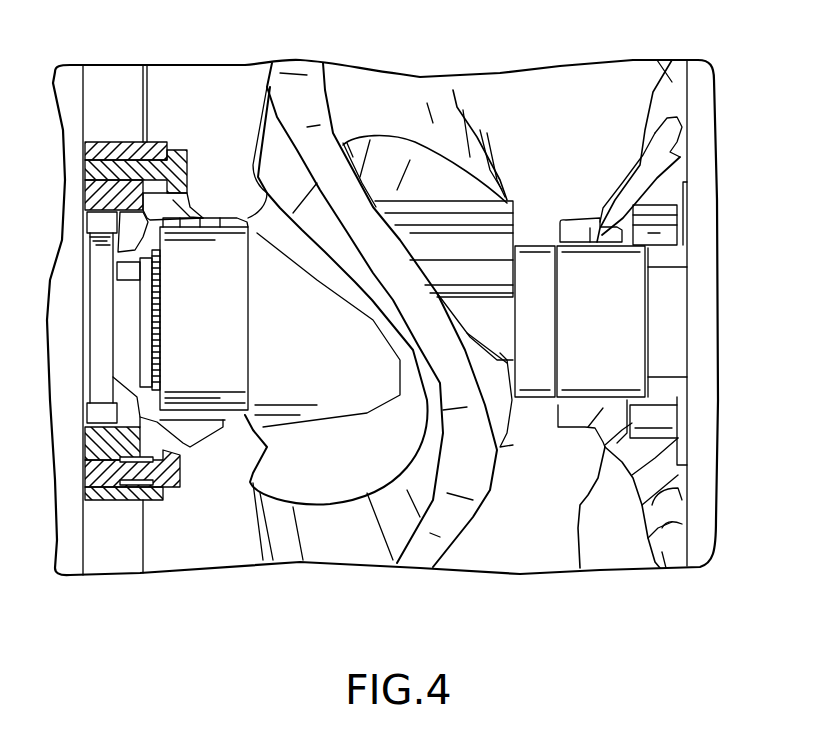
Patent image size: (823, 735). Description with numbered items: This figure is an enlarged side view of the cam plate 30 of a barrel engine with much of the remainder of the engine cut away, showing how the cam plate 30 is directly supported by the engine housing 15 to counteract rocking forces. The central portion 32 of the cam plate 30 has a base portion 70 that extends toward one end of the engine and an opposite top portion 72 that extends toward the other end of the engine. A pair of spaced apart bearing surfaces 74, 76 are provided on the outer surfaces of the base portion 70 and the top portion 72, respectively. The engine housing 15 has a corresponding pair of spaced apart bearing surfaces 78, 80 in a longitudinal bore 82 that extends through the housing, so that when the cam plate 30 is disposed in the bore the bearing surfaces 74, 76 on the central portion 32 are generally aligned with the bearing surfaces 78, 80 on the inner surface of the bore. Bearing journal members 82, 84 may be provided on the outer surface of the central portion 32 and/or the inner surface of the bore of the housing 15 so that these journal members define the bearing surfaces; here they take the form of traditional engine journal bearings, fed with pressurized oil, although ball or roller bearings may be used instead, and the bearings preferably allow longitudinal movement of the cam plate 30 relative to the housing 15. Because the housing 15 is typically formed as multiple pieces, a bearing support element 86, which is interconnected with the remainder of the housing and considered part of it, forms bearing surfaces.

The engine housing 15 is at (670, 173).
The cam plate 30 is at (513, 183).
The central portion 32 is at (445, 203).
The base portion 70 is at (590, 283).
The top portion 72 is at (192, 387).
The bearing surface 74 is at (623, 321).
The bearing surface 76 is at (211, 298).
The bearing surface 78 is at (677, 225).
The bearing surface 80 is at (227, 217).
The bearing journal member 82 is at (152, 253).
The bearing journal member 84 is at (213, 417).
The bearing support element 86 is at (195, 218).